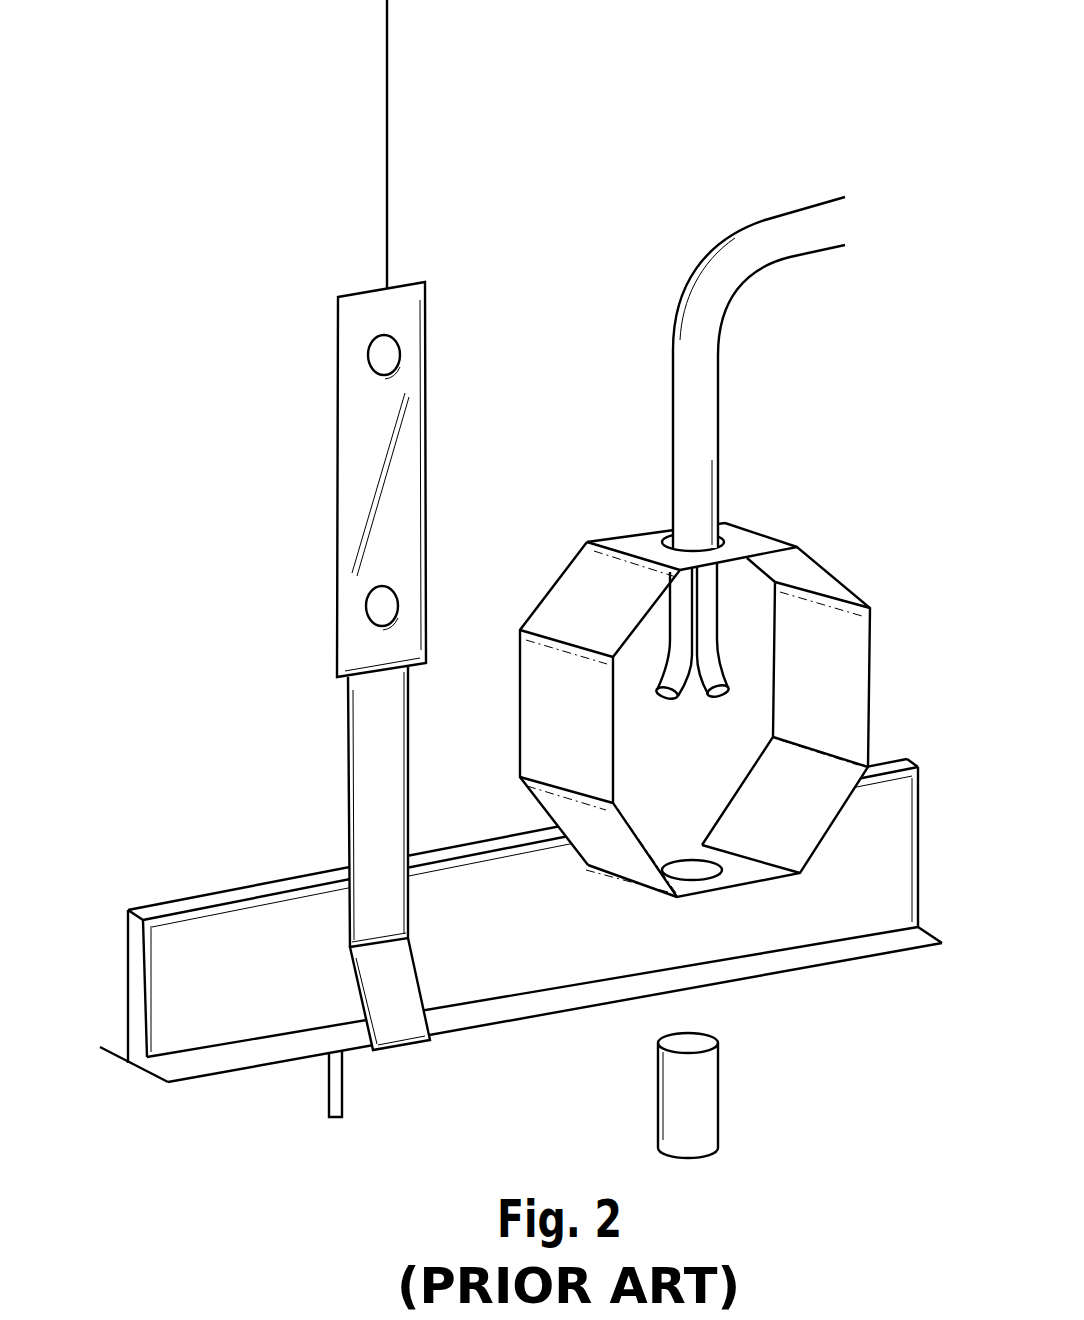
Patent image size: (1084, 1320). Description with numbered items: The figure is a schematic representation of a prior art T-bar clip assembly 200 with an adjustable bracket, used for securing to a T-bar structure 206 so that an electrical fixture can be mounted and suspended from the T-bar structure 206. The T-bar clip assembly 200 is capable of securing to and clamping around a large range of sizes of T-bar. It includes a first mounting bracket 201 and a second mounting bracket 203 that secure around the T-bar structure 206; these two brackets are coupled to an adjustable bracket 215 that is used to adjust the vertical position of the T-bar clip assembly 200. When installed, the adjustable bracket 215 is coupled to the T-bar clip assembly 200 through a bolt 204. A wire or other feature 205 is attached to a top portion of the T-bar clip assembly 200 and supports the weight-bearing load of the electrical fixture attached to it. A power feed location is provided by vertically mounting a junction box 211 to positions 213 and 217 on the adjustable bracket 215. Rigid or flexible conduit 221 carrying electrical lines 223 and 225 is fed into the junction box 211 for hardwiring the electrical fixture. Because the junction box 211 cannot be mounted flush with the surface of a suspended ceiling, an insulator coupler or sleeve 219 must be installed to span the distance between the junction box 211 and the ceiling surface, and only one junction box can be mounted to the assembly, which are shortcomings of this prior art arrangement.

The T-bar clip assembly 200 is at (256, 91).
The first mounting bracket 201 is at (385, 907).
The second mounting bracket 203 is at (346, 782).
The bolt 204 is at (331, 1124).
The wire or other feature 205 is at (389, 47).
The T-bar structure 206 is at (130, 990).
The junction box 211 is at (871, 672).
The position 213 is at (368, 357).
The adjustable bracket 215 is at (339, 463).
The position 217 is at (366, 611).
The insulator coupler or sleeve 219 is at (702, 1082).
The conduit 221 is at (777, 263).
The electrical line 223 is at (656, 704).
The electrical line 225 is at (723, 700).